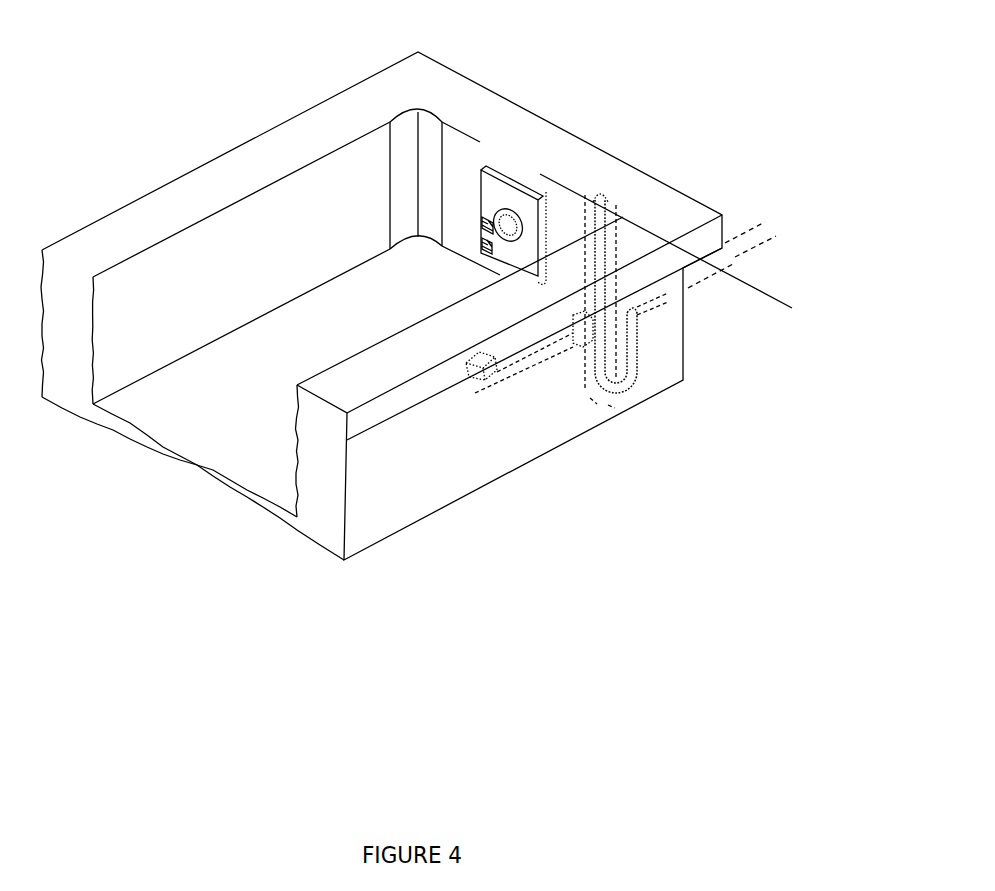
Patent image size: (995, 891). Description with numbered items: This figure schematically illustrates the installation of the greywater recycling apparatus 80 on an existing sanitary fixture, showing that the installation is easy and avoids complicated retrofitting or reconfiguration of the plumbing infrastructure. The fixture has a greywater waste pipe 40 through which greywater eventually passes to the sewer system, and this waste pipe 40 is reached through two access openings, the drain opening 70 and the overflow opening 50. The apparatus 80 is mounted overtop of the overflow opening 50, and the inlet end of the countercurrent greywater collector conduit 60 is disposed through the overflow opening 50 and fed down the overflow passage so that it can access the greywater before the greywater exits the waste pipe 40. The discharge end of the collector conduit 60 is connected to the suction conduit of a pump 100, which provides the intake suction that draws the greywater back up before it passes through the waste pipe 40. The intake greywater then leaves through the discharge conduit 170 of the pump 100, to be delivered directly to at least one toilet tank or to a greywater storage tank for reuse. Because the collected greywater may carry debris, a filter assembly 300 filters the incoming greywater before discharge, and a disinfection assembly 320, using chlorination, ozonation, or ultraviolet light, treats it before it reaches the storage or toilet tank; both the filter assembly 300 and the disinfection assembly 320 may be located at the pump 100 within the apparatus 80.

The greywater waste pipe 40 is at (672, 293).
The overflow opening 50 is at (512, 217).
The greywater collector conduit 60 is at (628, 366).
The drain opening 70 is at (466, 364).
The apparatus 80 is at (491, 161).
The pump 100 is at (432, 242).
The discharge conduit 170 is at (750, 282).
The filter assembly 300 is at (479, 237).
The disinfection assembly 320 is at (479, 247).